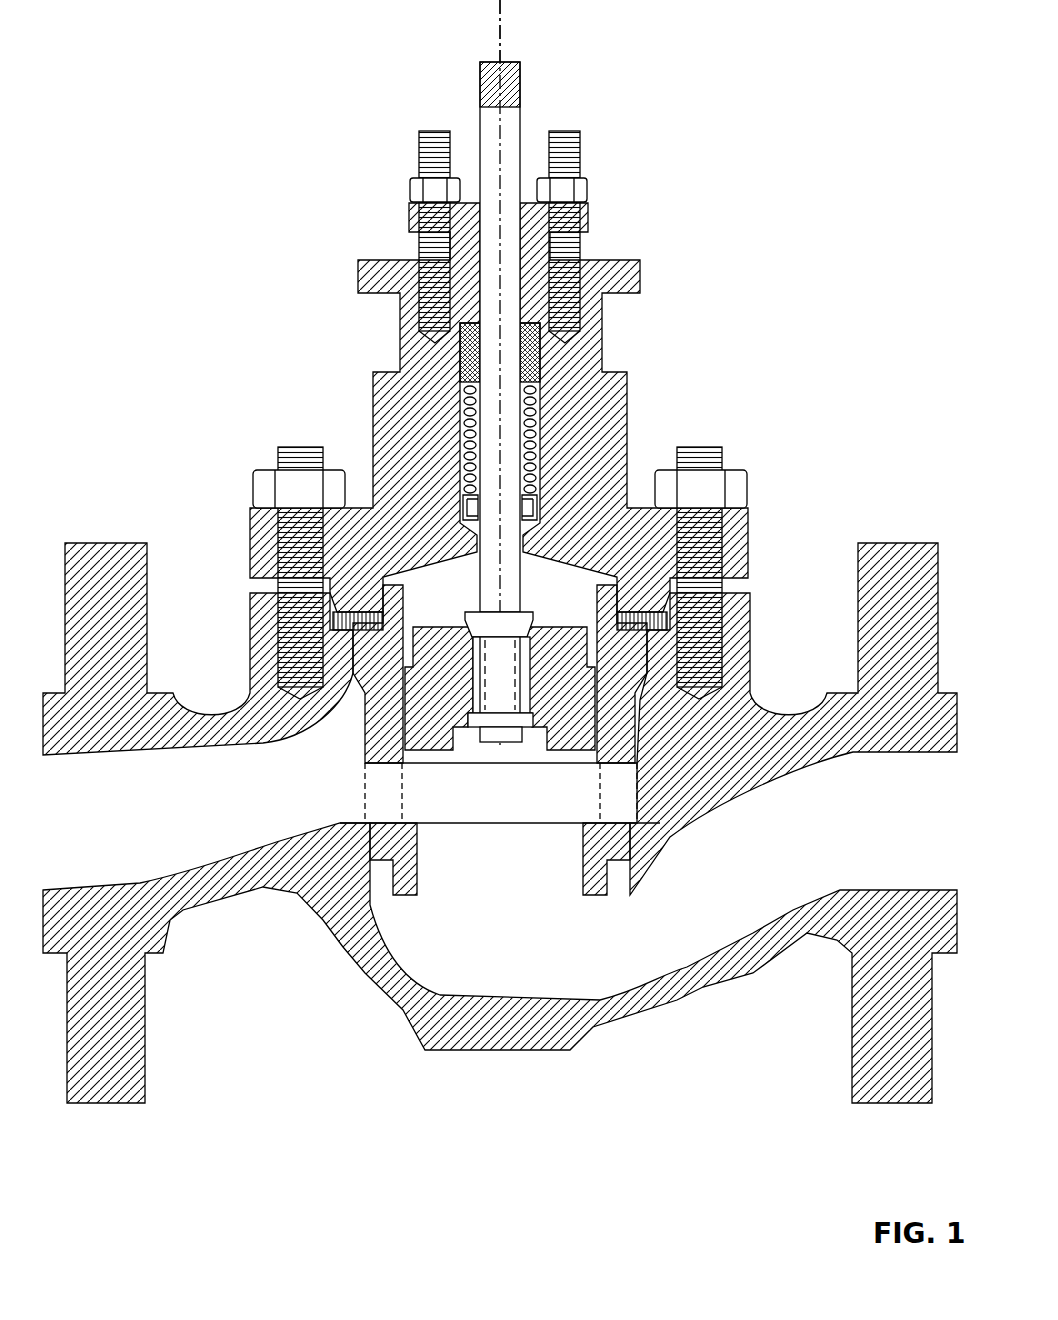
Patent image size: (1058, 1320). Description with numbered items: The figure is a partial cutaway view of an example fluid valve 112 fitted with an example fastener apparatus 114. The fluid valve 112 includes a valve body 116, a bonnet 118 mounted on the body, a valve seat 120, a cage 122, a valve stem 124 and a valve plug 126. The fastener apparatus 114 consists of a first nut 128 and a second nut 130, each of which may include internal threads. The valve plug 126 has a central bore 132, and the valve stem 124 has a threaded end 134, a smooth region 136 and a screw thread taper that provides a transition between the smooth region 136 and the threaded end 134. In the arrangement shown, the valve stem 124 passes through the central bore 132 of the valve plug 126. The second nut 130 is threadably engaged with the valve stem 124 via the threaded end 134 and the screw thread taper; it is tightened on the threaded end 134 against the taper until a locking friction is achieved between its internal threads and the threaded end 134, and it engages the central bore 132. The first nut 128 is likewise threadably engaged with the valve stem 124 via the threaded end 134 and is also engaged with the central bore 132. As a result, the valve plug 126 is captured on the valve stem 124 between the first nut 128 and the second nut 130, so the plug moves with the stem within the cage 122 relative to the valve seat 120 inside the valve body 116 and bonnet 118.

The fluid valve 112 is at (180, 64).
The fastener apparatus 114 is at (447, 612).
The valve body 116 is at (258, 647).
The bonnet 118 is at (407, 423).
The valve seat 120 is at (372, 832).
The cage 122 is at (615, 735).
The valve stem 124 is at (540, 378).
The valve plug 126 is at (432, 710).
The first nut 128 is at (510, 718).
The second nut 130 is at (505, 618).
The central bore 132 is at (470, 676).
The threaded end 134 is at (503, 685).
The smooth region 136 is at (512, 522).